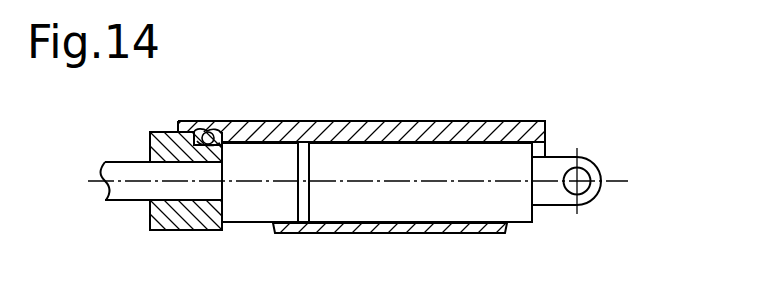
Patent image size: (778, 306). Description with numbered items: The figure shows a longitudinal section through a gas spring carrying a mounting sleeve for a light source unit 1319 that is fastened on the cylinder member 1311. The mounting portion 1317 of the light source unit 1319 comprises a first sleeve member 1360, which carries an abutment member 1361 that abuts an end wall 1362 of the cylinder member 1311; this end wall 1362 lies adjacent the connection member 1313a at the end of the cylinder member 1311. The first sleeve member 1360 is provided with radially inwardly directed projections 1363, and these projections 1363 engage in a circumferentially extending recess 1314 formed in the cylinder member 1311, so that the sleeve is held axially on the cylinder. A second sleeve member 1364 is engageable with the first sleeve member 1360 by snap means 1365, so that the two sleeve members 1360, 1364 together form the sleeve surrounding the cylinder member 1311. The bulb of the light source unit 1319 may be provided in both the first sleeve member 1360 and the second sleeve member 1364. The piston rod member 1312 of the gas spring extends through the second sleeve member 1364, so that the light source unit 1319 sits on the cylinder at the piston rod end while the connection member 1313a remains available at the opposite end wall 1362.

The cylinder member 1311 is at (414, 201).
The piston rod member 1312 is at (122, 166).
The connection member 1313a is at (598, 170).
The circumferentially extending recess 1314 is at (306, 200).
The mounting portion 1317 is at (415, 119).
The light source unit 1319 is at (338, 114).
The first sleeve member 1360 is at (478, 119).
The abutment member 1361 is at (548, 148).
The end wall 1362 is at (535, 220).
The radially inwardly directed projections 1363 is at (303, 225).
The second sleeve member 1364 is at (150, 217).
The snap means 1365 is at (219, 129).